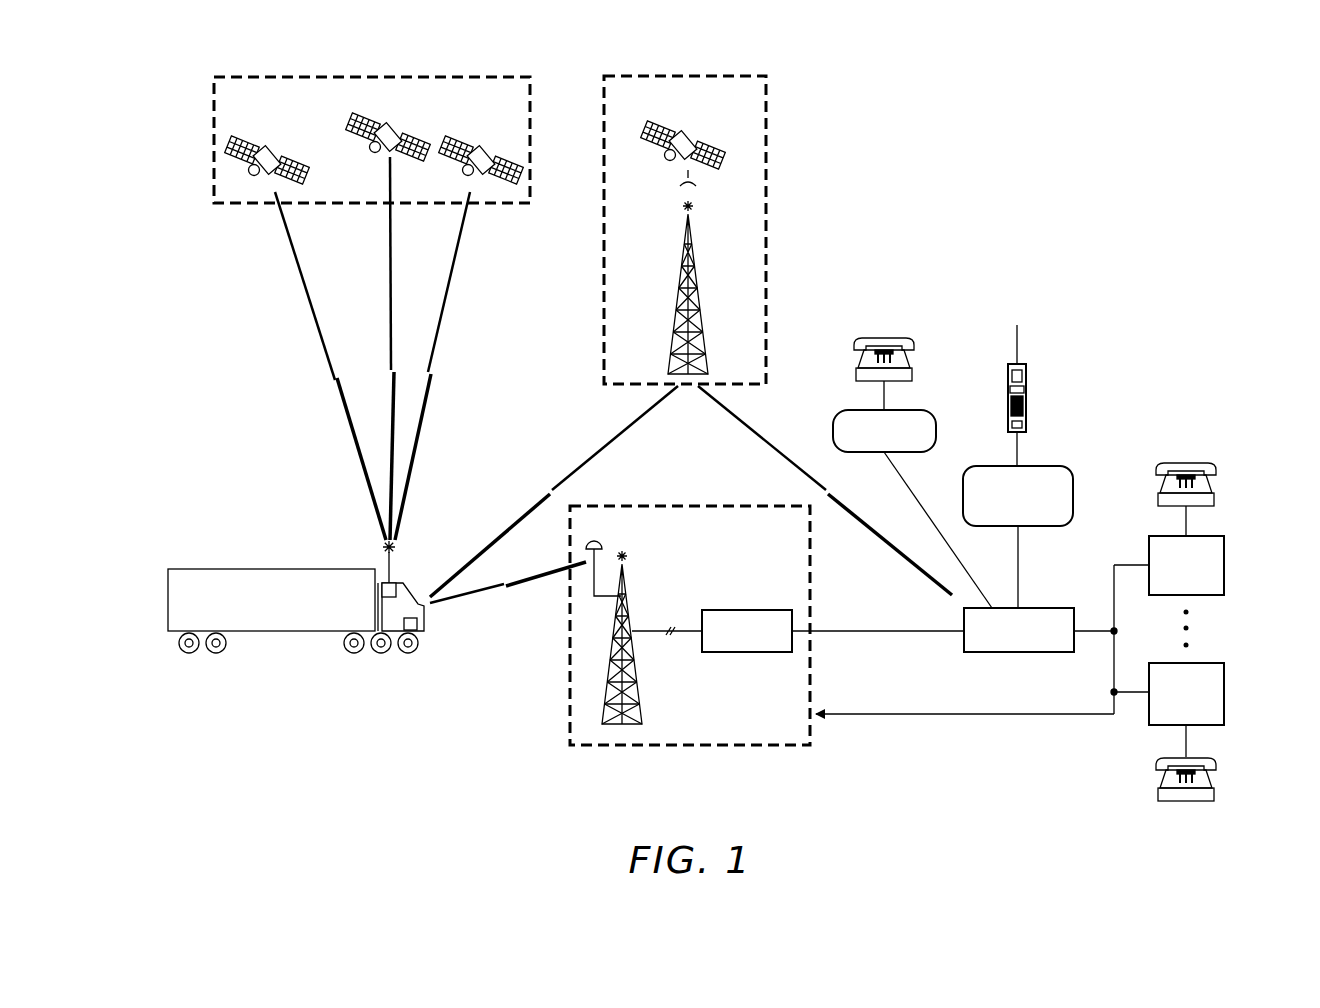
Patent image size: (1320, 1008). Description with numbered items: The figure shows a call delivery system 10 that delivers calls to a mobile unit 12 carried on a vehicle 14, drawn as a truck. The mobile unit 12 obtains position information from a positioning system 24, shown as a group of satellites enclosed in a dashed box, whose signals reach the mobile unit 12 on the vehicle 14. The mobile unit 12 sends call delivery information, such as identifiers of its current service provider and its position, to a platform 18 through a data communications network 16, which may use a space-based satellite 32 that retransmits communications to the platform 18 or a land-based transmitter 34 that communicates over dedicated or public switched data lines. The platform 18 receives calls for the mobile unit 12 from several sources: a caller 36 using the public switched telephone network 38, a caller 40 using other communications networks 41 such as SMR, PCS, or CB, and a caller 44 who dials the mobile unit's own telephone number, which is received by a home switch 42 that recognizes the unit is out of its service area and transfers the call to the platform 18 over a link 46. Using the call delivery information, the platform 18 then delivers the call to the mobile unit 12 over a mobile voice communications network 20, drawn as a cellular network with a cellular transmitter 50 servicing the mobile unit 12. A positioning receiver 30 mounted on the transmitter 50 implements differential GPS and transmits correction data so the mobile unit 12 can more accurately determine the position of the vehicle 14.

The call delivery system 10 is at (1100, 165).
The mobile unit 12 is at (382, 590).
The vehicle 14 is at (168, 605).
The data communications network 16 is at (774, 132).
The platform 18 is at (1044, 608).
The mobile voice communications network 20 is at (752, 752).
The positioning system 24 is at (208, 126).
The positioning receiver 30 is at (604, 548).
The satellite 32 is at (696, 132).
The land-based transmitter 34 is at (672, 296).
The caller 36 is at (886, 335).
The public switched telephone network 38 is at (935, 412).
The caller 40 is at (1028, 378).
The other communications networks 41 is at (1070, 466).
The home switch 42 is at (1224, 562).
The caller 44 is at (1190, 460).
The link 46 is at (1114, 565).
The cellular transmitter 50 is at (646, 689).